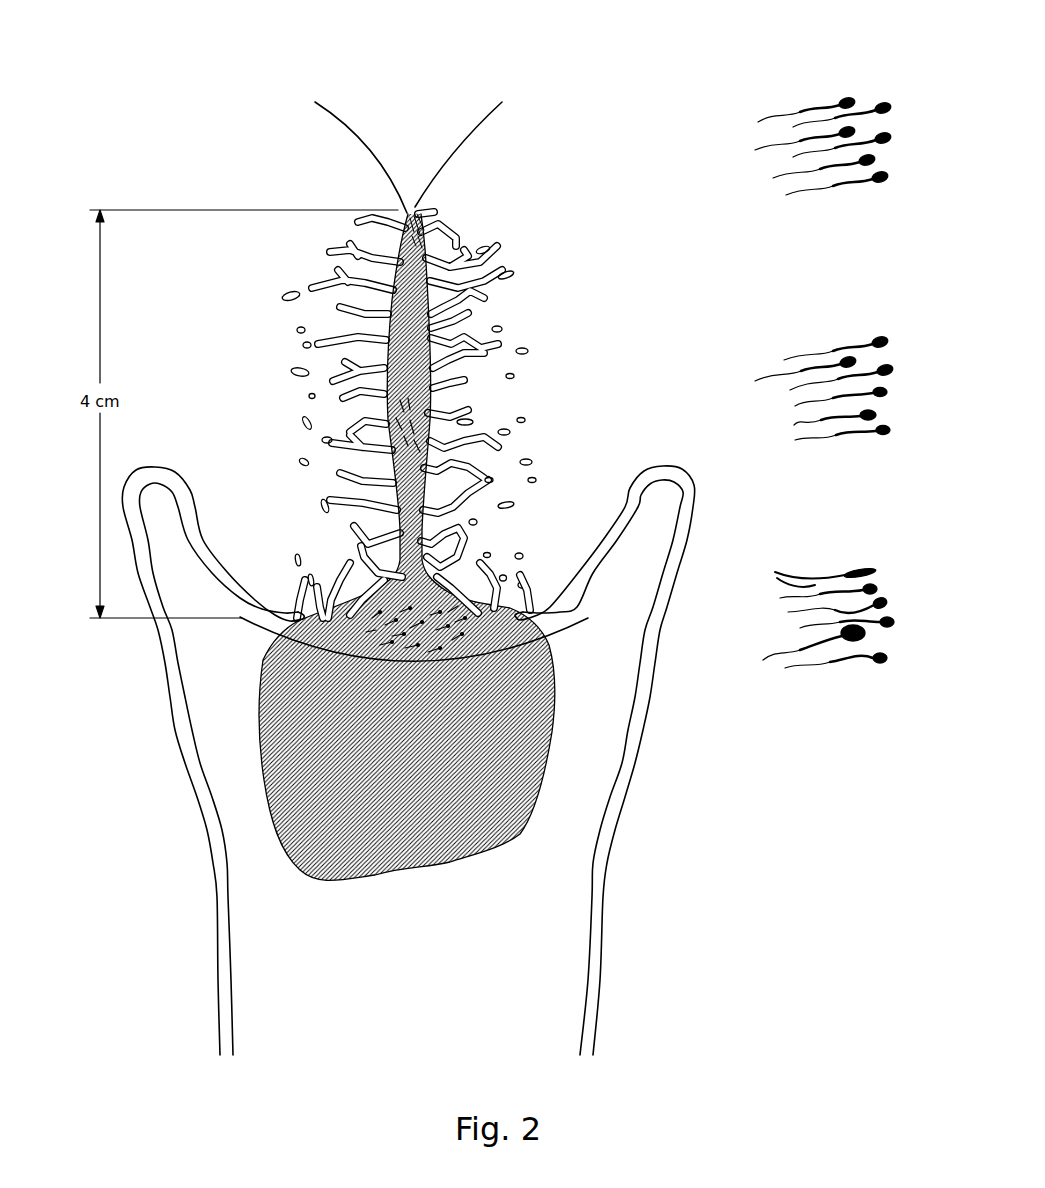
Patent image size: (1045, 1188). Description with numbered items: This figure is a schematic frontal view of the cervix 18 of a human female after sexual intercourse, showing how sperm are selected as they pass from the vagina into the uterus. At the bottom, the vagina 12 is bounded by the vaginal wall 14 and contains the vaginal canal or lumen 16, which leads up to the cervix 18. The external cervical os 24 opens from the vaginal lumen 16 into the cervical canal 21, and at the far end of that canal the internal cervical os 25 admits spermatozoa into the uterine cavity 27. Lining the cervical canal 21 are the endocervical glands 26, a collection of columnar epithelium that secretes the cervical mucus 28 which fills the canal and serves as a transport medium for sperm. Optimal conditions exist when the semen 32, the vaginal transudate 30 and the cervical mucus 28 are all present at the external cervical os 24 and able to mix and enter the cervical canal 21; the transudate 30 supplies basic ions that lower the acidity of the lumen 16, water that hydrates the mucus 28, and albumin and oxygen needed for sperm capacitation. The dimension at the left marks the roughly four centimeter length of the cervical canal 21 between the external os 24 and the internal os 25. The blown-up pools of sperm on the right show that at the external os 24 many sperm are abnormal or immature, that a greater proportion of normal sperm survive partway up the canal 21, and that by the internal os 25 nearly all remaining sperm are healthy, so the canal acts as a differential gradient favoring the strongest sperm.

The vagina 12 is at (401, 760).
The vaginal wall 14 is at (216, 899).
The vaginal canal or lumen 16 is at (373, 948).
The cervix 18 is at (353, 594).
The cervical canal 21 is at (416, 405).
The external cervical os 24 is at (405, 580).
The internal cervical os 25 is at (414, 212).
The endocervical glands 26 is at (461, 323).
The uterine cavity 27 is at (418, 131).
The cervical mucus 28 is at (418, 368).
The vaginal transudate 30 is at (426, 795).
The semen 32 is at (427, 637).